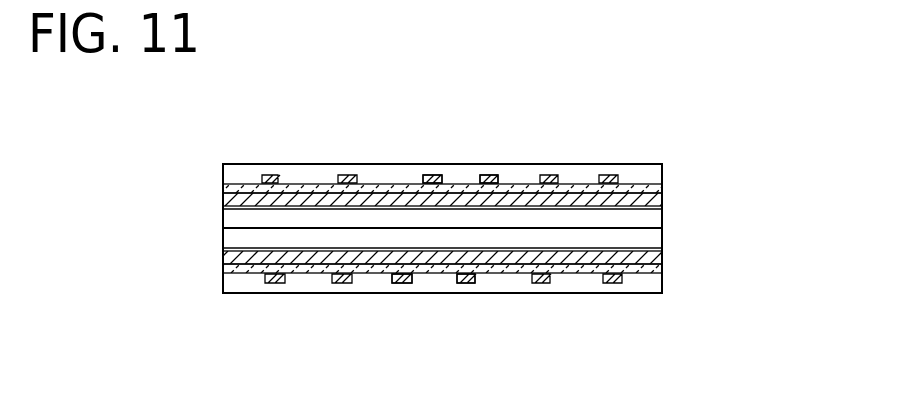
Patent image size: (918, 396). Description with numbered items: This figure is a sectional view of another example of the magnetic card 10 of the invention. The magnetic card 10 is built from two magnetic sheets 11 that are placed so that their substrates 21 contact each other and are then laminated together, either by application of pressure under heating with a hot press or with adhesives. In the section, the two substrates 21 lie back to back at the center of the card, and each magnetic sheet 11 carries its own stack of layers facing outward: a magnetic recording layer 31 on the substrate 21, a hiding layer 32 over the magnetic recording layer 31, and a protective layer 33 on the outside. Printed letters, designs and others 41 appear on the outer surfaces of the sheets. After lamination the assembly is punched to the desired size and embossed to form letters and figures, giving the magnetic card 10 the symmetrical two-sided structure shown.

The magnetic card 10 is at (298, 148).
The magnetic sheet 11 is at (793, 56).
The substrate 21 is at (662, 220).
The magnetic recording layer 31 is at (662, 198).
The hiding layer 32 is at (662, 186).
The protective layer 33 is at (662, 170).
The printed letters, designs and others 41 is at (480, 174).